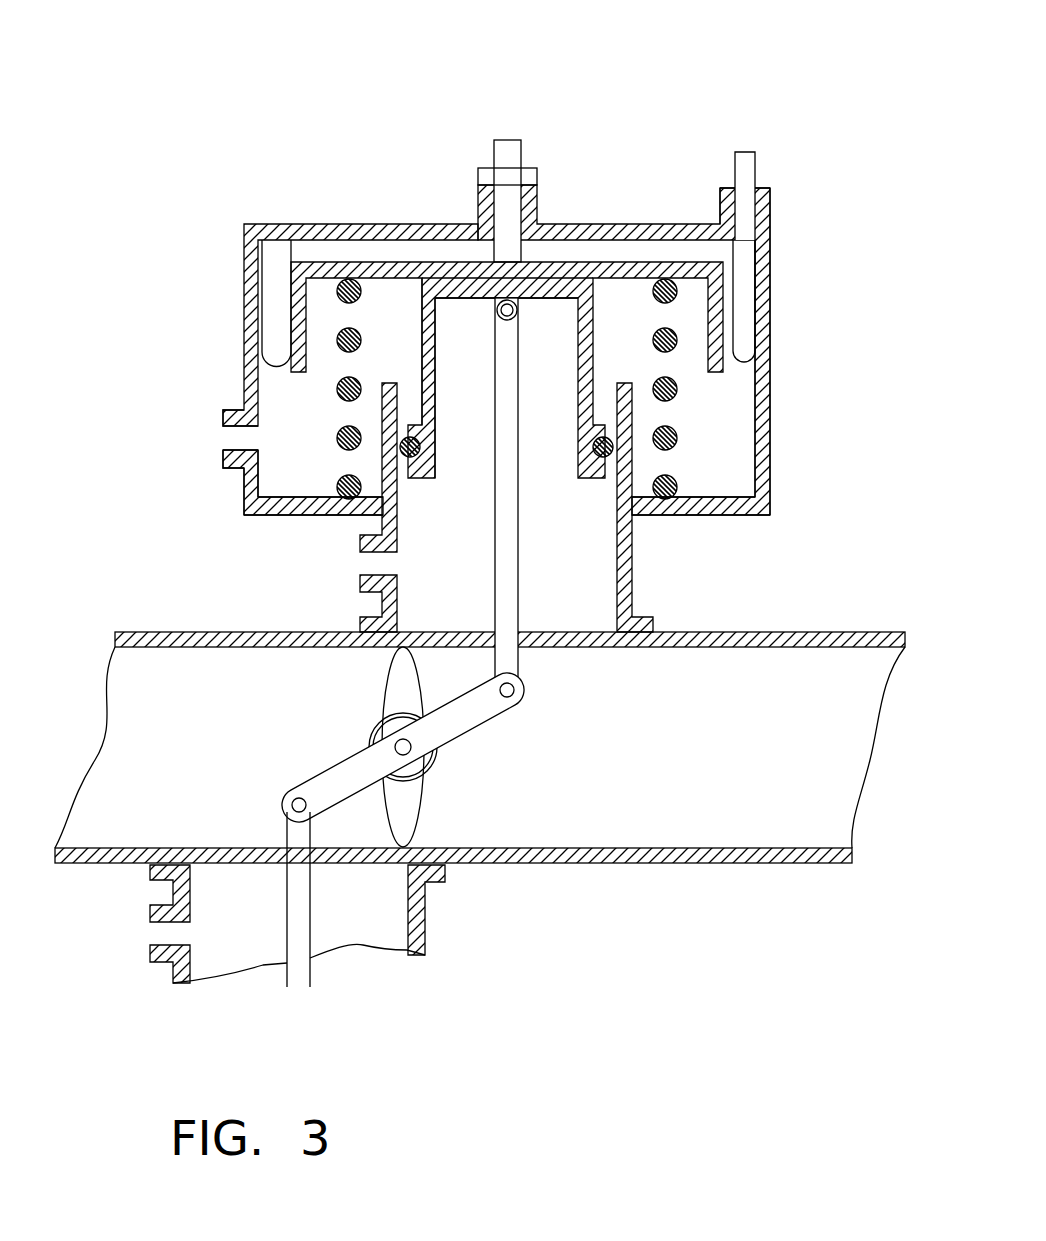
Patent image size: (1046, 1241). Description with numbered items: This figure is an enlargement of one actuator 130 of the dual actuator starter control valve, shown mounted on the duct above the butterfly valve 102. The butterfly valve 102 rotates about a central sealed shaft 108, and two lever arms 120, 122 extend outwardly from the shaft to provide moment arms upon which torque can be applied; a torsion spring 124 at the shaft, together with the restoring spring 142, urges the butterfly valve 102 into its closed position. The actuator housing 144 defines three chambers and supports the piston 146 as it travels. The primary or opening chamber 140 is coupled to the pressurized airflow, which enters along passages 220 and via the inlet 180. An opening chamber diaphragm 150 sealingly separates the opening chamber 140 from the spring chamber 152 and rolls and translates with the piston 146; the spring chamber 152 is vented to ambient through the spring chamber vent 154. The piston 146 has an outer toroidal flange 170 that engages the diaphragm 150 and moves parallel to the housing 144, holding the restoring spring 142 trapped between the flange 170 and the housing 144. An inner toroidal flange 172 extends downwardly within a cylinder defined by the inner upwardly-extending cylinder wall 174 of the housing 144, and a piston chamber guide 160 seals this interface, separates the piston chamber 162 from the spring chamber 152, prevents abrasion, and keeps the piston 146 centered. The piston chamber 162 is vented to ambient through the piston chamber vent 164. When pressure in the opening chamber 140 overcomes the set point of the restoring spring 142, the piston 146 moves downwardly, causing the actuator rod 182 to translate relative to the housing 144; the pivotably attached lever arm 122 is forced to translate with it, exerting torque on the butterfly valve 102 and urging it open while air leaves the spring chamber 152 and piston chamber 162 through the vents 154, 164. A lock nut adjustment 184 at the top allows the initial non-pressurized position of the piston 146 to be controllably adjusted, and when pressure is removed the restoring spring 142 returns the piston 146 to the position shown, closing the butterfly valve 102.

The actuator 130 is at (590, 52).
The lock nut adjustment 184 is at (510, 141).
The passages 220 is at (747, 152).
The inlet 180 is at (735, 172).
The piston 146 is at (473, 272).
The outer toroidal flange 170 is at (333, 268).
The opening chamber 140 is at (278, 256).
The inner toroidal flange 172 is at (440, 330).
The inner cylinder wall 174 is at (436, 348).
The actuator rod 182 is at (494, 396).
The piston chamber 162 is at (570, 462).
The piston chamber guide 160 is at (610, 457).
The opening chamber diaphragm 150 is at (273, 368).
The spring chamber vent 154 is at (230, 450).
The actuator housing 144 is at (771, 381).
The restoring spring 142 is at (327, 480).
The spring chamber 152 is at (722, 472).
The piston chamber vent 164 is at (363, 580).
The butterfly valve 102 is at (393, 682).
The central sealed shaft 108 is at (400, 758).
The torsion spring 124 is at (357, 745).
The lever arm 122 is at (490, 705).
The lever arm 120 is at (305, 790).